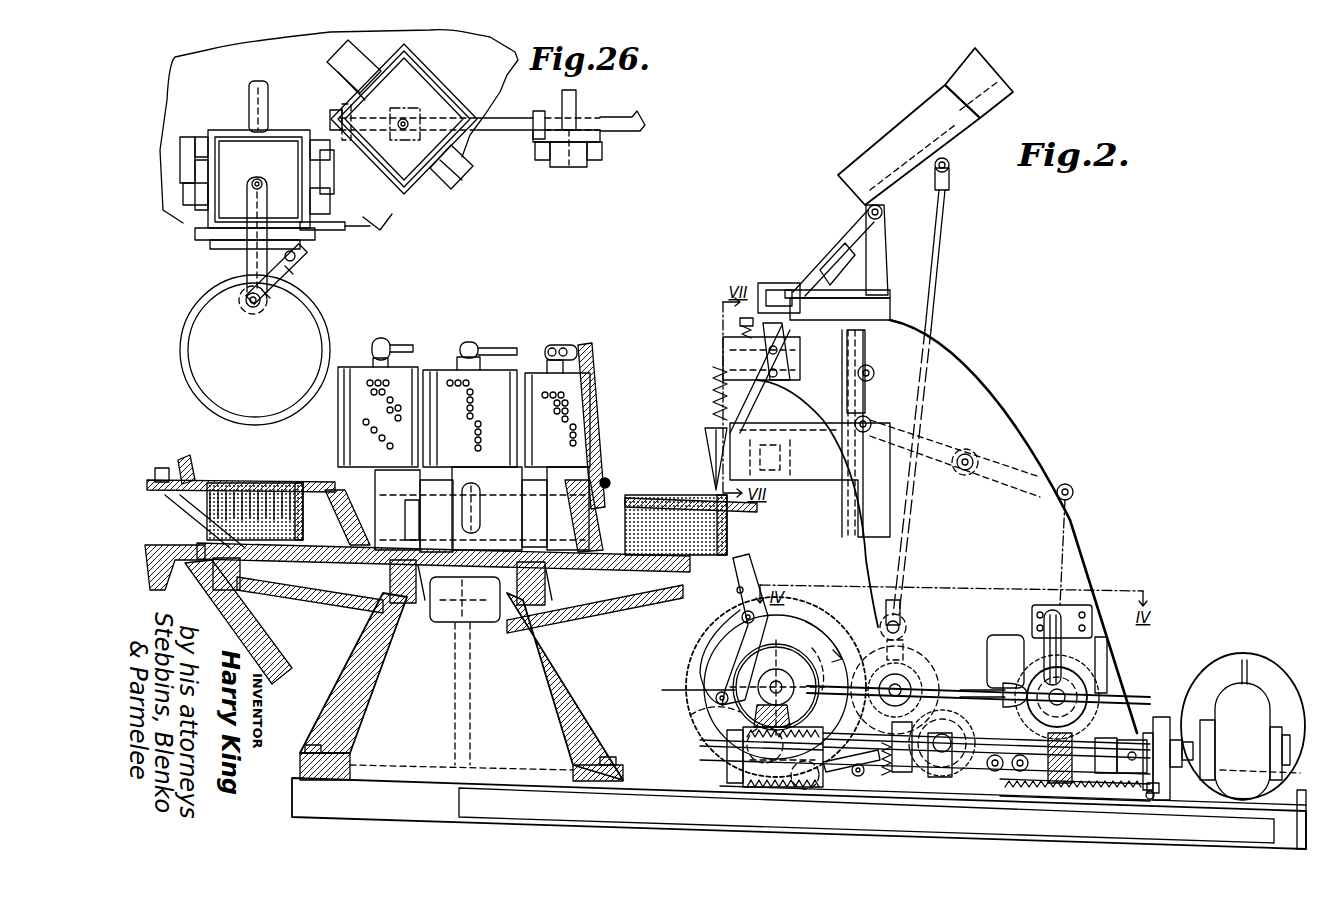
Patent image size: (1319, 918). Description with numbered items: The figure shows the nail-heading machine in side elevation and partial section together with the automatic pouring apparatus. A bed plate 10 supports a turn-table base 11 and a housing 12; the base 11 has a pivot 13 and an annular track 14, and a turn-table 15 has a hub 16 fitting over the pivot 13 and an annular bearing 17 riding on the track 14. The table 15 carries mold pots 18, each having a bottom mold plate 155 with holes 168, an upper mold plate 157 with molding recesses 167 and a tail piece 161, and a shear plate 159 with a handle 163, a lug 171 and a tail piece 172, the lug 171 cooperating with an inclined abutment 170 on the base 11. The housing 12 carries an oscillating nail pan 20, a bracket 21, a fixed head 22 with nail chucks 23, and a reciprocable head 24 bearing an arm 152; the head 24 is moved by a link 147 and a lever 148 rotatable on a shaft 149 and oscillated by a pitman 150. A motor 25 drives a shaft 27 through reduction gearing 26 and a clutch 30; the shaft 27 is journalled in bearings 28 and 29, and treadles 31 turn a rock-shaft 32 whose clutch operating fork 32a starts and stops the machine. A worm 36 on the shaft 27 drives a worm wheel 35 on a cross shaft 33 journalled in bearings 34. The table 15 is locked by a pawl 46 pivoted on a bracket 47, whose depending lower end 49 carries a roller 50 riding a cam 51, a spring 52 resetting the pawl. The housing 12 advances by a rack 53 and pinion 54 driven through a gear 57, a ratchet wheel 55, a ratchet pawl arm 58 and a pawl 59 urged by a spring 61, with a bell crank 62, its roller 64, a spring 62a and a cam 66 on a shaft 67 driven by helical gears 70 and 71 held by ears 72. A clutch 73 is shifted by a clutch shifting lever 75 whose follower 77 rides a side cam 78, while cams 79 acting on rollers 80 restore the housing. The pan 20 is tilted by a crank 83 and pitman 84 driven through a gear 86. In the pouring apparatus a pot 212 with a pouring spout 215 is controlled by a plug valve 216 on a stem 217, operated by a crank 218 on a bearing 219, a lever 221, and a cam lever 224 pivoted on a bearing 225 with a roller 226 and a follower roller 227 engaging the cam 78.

In FIG. 2, the bed plate 10 is at (632, 800).
In FIG. 2, the turn-table base 11 is at (540, 688).
In FIG. 2, the housing 12 is at (998, 400).
In FIG. 2, the pivot 13 is at (452, 618).
In FIG. 2, the annular track 14 is at (250, 588).
In FIG. 26, the turn-table 15 is at (380, 200).
In FIG. 2, the turn-table 15 is at (443, 562).
In FIG. 2, the hub 16 is at (545, 584).
In FIG. 2, the annular bearing 17 is at (270, 570).
In FIG. 26, the mold pot 18 is at (200, 212).
In FIG. 2, the mold pot 18 is at (205, 520).
In FIG. 2, the oscillating nail pan 20 is at (925, 105).
In FIG. 2, the bracket 21 is at (880, 246).
In FIG. 2, the fixed head 22 is at (822, 495).
In FIG. 2, the nail chucks 23 is at (708, 436).
In FIG. 2, the reciprocable head 24 is at (803, 383).
In FIG. 2, the motor 25 is at (1240, 660).
In FIG. 2, the reduction gearing 26 is at (1250, 712).
In FIG. 2, the shaft 27 is at (830, 735).
In FIG. 2, the bearing 28 is at (712, 744).
In FIG. 2, the bearing 29 is at (1110, 738).
In FIG. 2, the clutch 30 is at (1160, 717).
In FIG. 2, the treadles 31 is at (833, 770).
In FIG. 2, the rock-shaft 32 is at (1152, 798).
In FIG. 2, the clutch operating fork 32a is at (1148, 778).
In FIG. 26, the cross shaft 33 is at (577, 100).
In FIG. 2, the cross shaft 33 is at (777, 687).
In FIG. 2, the bearings 34 is at (727, 762).
In FIG. 2, the worm wheel 35 is at (693, 731).
In FIG. 2, the worm 36 is at (782, 770).
In FIG. 2, the pawl 46 is at (740, 585).
In FIG. 2, the bracket 47 is at (705, 670).
In FIG. 2, the depending lower end 49 is at (692, 694).
In FIG. 2, the roller 50 is at (698, 715).
In FIG. 2, the cam 51 is at (822, 625).
In FIG. 2, the spring 52 is at (680, 595).
In FIG. 2, the rack 53 is at (805, 775).
In FIG. 2, the pinion 54 is at (862, 778).
In FIG. 2, the ratchet wheel 55 is at (918, 720).
In FIG. 2, the gear 57 is at (900, 715).
In FIG. 2, the ratchet pawl arm 58 is at (905, 680).
In FIG. 2, the pawl 59 is at (993, 775).
In FIG. 2, the spring 61 is at (972, 728).
In FIG. 2, the bell crank 62 is at (1085, 795).
In FIG. 2, the spring 62a is at (1050, 796).
In FIG. 2, the roller 64 is at (1015, 798).
In FIG. 2, the cam 66 is at (1032, 633).
In FIG. 2, the shaft 67 is at (1030, 665).
In FIG. 2, the helical gear 70 is at (1078, 745).
In FIG. 2, the helical gear 71 is at (1095, 660).
In FIG. 2, the ears 72 is at (1040, 796).
In FIG. 2, the clutch 73 is at (1085, 680).
In FIG. 26, the clutch shifting lever 75 is at (630, 118).
In FIG. 2, the clutch shifting lever 75 is at (993, 680).
In FIG. 2, the follower 77 is at (870, 575).
In FIG. 26, the side cam 78 is at (598, 140).
In FIG. 2, the side cam 78 is at (790, 640).
In FIG. 2, the cams 79 is at (903, 645).
In FIG. 2, the rollers 80 is at (905, 655).
In FIG. 2, the crank 83 is at (905, 625).
In FIG. 2, the pitman 84 is at (935, 252).
In FIG. 2, the gear 86 is at (844, 655).
In FIG. 2, the link 147 is at (870, 380).
In FIG. 2, the lever 148 is at (935, 445).
In FIG. 2, the shaft 149 is at (968, 455).
In FIG. 2, the pitman 150 is at (1070, 520).
In FIG. 2, the arm 152 is at (762, 300).
In FIG. 2, the bottom mold plate 155 is at (255, 483).
In FIG. 2, the upper mold plate 157 is at (600, 388).
In FIG. 2, the shear plate 159 is at (400, 382).
In FIG. 2, the tail piece 161 is at (524, 582).
In FIG. 2, the handle 163 is at (550, 348).
In FIG. 2, the molding recesses 167 is at (215, 482).
In FIG. 2, the holes 168 is at (606, 478).
In FIG. 2, the abutment 170 is at (162, 468).
In FIG. 2, the lug 171 is at (185, 458).
In FIG. 2, the tail piece 172 is at (445, 520).
In FIG. 26, the pot 212 is at (200, 310).
In FIG. 26, the pouring spout 215 is at (248, 192).
In FIG. 26, the plug valve 216 is at (265, 305).
In FIG. 26, the stem 217 is at (250, 305).
In FIG. 26, the crank 218 is at (300, 286).
In FIG. 26, the bearing 219 is at (300, 262).
In FIG. 26, the lever 221 is at (346, 138).
In FIG. 26, the cam lever 224 is at (505, 132).
In FIG. 26, the bearing 225 is at (403, 118).
In FIG. 26, the roller 226 is at (335, 112).
In FIG. 26, the follower roller 227 is at (540, 112).